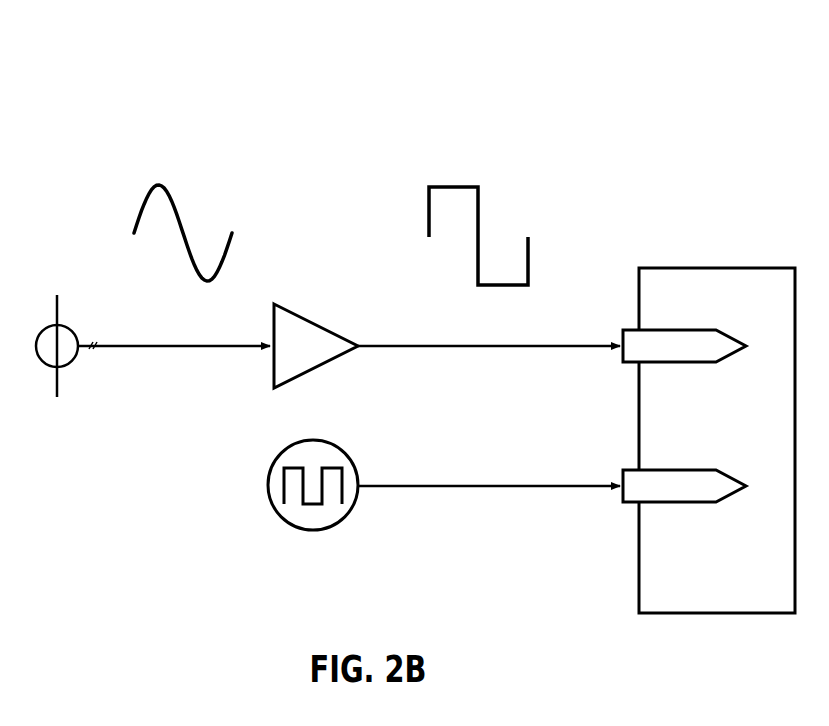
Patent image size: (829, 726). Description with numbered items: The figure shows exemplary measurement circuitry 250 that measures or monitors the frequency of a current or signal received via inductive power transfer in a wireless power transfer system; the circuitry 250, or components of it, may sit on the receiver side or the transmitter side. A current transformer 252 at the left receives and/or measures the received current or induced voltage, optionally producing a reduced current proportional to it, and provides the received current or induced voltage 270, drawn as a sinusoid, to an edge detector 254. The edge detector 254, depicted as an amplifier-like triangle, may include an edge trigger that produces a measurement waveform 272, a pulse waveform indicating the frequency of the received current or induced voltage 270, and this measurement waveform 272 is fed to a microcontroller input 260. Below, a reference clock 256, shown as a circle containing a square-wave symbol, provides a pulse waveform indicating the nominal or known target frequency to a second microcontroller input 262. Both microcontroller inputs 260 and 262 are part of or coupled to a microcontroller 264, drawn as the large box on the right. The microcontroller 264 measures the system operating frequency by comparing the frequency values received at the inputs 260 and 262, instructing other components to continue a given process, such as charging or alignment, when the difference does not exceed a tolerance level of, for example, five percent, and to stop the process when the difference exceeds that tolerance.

The measurement circuitry 250 is at (104, 54).
The current transformer 252 is at (75, 380).
The edge detector 254 is at (328, 378).
The reference clock 256 is at (356, 518).
The microcontroller input 260 is at (662, 372).
The microcontroller input 262 is at (682, 512).
The microcontroller 264 is at (717, 440).
The received current or induced voltage 270 is at (209, 200).
The measurement waveform 272 is at (507, 210).